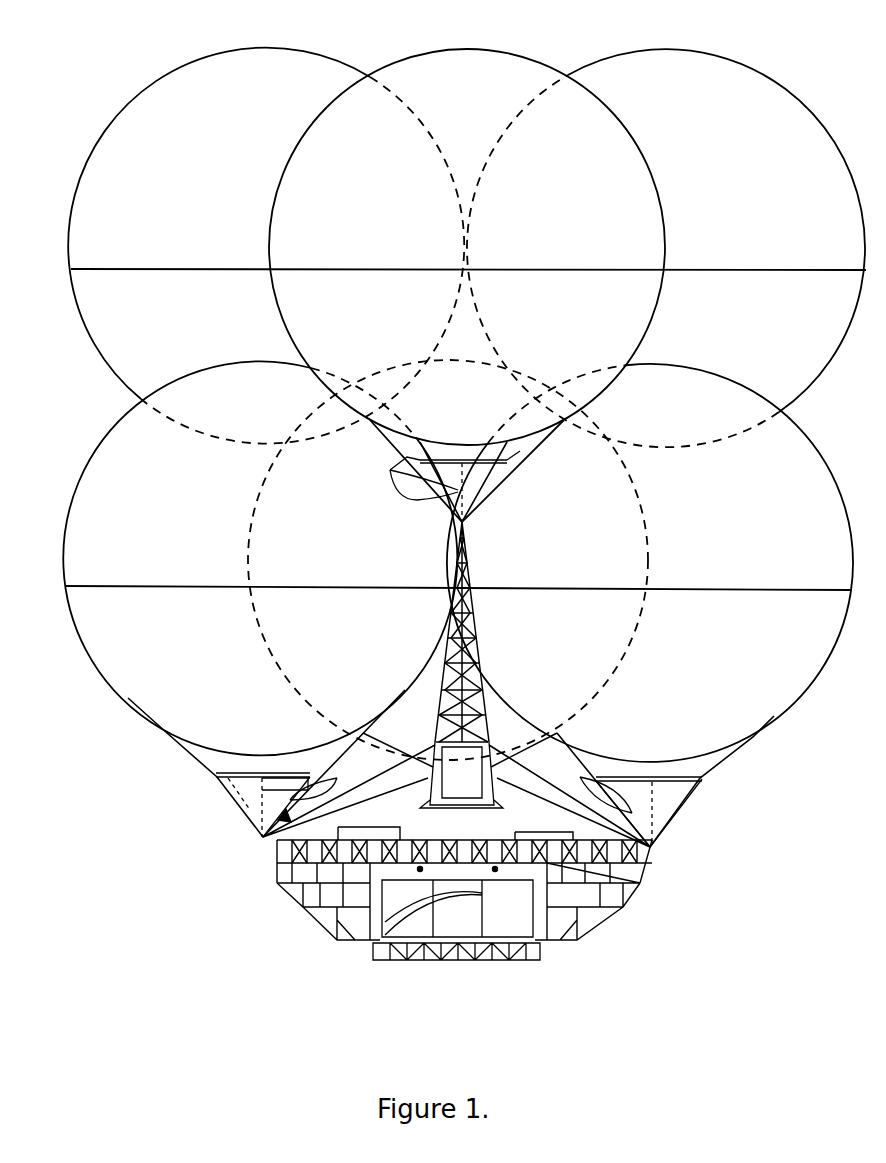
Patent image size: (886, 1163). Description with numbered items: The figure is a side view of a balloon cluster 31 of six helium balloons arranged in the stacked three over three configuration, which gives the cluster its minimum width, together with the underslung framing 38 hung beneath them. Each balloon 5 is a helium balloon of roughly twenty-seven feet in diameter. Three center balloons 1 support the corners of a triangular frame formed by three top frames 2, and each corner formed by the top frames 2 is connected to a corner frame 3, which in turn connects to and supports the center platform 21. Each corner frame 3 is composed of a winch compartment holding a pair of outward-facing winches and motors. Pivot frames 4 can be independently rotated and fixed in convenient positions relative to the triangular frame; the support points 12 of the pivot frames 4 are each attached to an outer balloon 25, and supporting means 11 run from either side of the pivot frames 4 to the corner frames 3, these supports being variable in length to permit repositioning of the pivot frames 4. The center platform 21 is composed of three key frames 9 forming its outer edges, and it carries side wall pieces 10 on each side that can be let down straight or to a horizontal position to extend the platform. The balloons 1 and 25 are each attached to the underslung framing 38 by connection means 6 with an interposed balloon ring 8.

The center balloon 1 is at (87, 456).
The top frame 2 is at (653, 843).
The corner frame 3 is at (258, 900).
The pivot frame 4 is at (478, 612).
The balloon 5 is at (122, 143).
The connection means 6 is at (392, 470).
The balloon ring 8 is at (507, 462).
The key frame 9 is at (521, 964).
The side wall piece 10 is at (382, 932).
The supporting means 11 is at (497, 818).
The support point 12 is at (464, 520).
The center platform 21 is at (402, 977).
The outer balloon 25 is at (178, 66).
The balloon cluster 31 is at (79, 832).
The underslung framing 38 is at (713, 882).